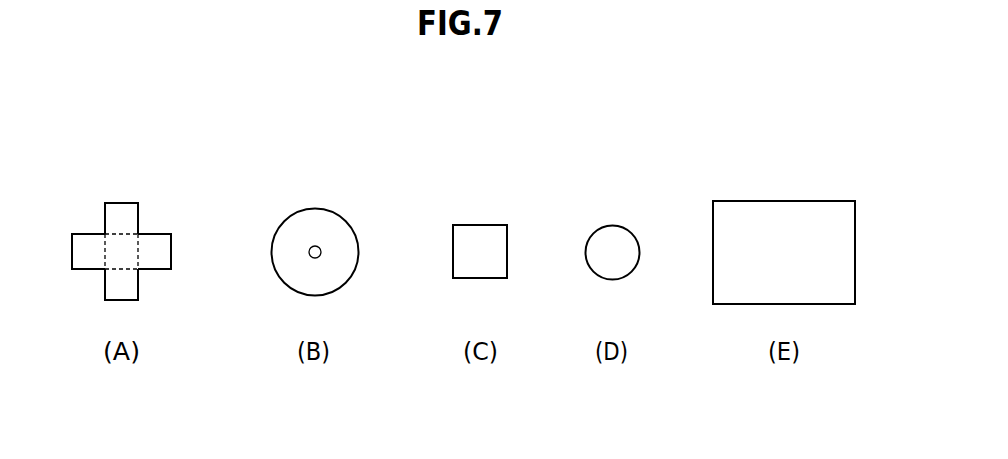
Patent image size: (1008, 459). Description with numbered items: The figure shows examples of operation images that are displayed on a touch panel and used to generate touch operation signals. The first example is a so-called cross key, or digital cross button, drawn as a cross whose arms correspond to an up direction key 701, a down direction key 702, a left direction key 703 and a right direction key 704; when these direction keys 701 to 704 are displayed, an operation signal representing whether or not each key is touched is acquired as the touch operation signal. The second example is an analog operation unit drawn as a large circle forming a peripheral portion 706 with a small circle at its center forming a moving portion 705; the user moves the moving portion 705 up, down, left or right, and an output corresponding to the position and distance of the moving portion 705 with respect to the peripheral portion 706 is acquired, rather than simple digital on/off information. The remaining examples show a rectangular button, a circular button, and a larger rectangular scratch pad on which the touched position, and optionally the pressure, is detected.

The up direction key 701 is at (120, 210).
The down direction key 702 is at (127, 285).
The left direction key 703 is at (90, 243).
The right direction key 704 is at (150, 243).
The moving portion 705 is at (318, 247).
The peripheral portion 706 is at (317, 208).